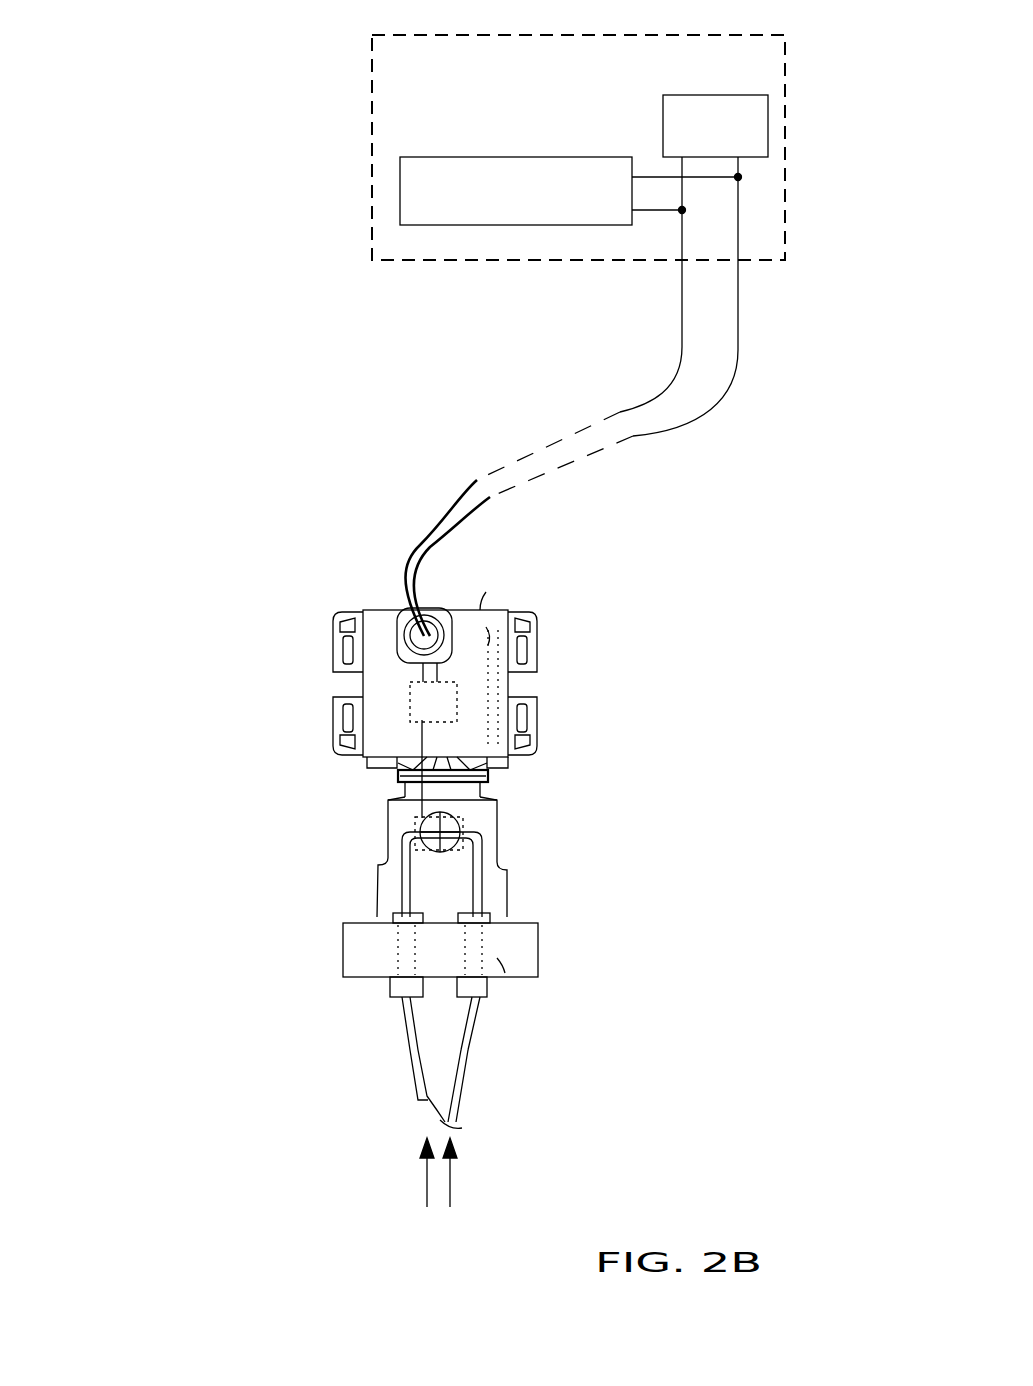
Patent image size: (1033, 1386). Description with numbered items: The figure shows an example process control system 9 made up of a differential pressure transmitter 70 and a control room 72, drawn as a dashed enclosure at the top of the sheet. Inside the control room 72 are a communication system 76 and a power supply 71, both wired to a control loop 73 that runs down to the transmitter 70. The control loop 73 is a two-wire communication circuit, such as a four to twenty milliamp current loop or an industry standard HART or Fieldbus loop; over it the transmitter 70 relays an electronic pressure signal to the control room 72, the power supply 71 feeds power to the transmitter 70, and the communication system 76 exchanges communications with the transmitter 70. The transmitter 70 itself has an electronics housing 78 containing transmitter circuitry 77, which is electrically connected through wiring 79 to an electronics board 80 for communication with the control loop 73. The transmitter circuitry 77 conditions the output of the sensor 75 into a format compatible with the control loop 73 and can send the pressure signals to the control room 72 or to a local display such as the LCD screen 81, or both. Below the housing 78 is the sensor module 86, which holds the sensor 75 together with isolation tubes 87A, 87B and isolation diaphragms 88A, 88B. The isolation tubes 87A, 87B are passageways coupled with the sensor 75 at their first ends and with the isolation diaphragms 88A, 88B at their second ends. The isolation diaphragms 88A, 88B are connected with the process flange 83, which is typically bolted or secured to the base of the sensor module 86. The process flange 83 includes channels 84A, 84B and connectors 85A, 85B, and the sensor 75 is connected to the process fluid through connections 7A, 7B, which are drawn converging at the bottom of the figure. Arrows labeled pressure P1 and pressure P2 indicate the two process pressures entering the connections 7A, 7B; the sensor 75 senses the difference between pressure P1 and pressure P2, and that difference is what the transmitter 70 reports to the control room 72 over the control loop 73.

The process measurement system 9 is at (188, 433).
The control room 72 is at (372, 160).
The communication system 76 is at (512, 157).
The power supply 71 is at (663, 128).
The control loop 73 is at (738, 310).
The differential pressure transmitter 70 is at (312, 590).
The LCD screen 81 is at (480, 610).
The electronics housing 78 is at (375, 618).
The transmitter circuitry 77 is at (423, 700).
The wiring 79 is at (420, 734).
The electronics board 80 is at (400, 787).
The sensor module 86 is at (493, 802).
The sensor 75 is at (463, 818).
The isolation tube 87A is at (387, 863).
The isolation tube 87B is at (482, 887).
The isolation diaphragm 88A is at (398, 915).
The isolation diaphragm 88B is at (490, 913).
The process flange 83 is at (400, 958).
The channel 84A is at (398, 988).
The channel 84B is at (512, 988).
The connector 85A is at (397, 997).
The connector 85B is at (487, 990).
The connection 7A is at (425, 1060).
The connection 7B is at (463, 1063).
The pressure P1 is at (415, 1191).
The pressure P2 is at (456, 1191).